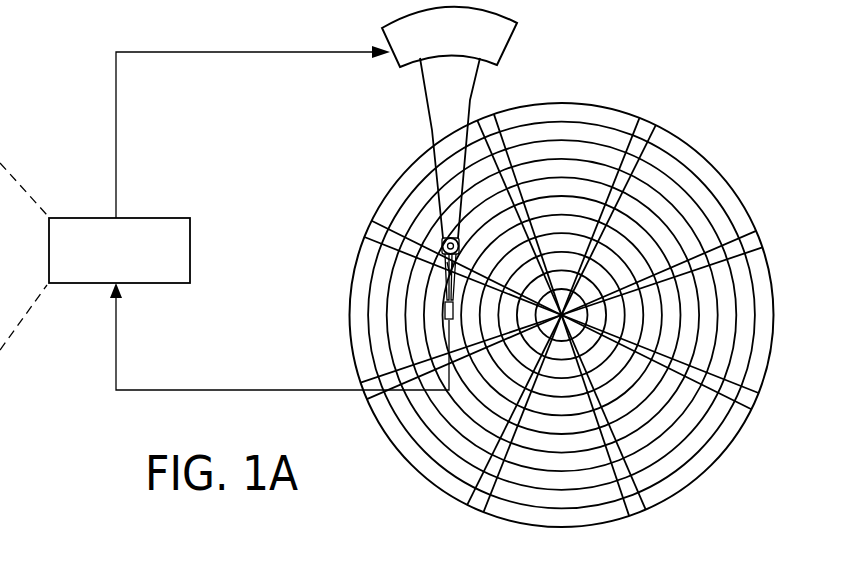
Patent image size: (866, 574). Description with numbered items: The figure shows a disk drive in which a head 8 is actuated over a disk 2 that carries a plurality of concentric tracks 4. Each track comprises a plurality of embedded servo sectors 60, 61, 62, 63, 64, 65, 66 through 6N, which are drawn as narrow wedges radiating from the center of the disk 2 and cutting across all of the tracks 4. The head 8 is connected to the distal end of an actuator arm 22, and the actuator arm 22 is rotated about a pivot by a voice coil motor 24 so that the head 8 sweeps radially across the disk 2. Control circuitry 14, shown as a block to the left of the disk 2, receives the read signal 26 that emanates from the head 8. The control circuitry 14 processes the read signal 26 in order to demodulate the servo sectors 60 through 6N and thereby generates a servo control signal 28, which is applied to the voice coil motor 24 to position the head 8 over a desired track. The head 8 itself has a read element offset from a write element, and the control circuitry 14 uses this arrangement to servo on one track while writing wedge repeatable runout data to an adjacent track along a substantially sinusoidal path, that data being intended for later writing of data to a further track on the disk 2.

The disk 2 is at (708, 152).
The tracks 4 is at (558, 135).
The servo sector 60 is at (643, 125).
The servo sector 61 is at (748, 238).
The servo sector 62 is at (755, 400).
The servo sector 63 is at (632, 513).
The servo sector 64 is at (477, 508).
The servo sector 65 is at (363, 398).
The servo sector 66 is at (368, 225).
The servo sector 6N is at (487, 123).
The head 8 is at (433, 323).
The control circuitry 14 is at (156, 218).
The actuator arm 22 is at (430, 132).
The voice coil motor 24 is at (397, 62).
The read signal 26 is at (250, 390).
The servo control signal 28 is at (116, 122).